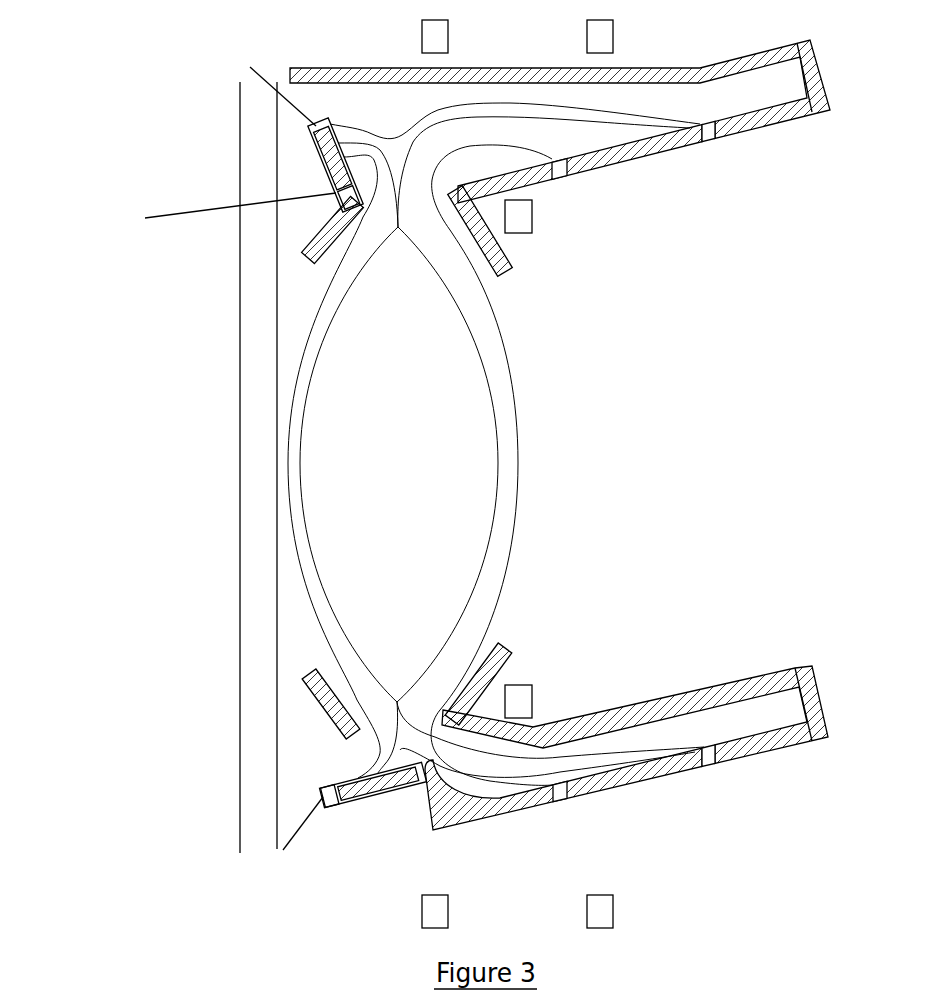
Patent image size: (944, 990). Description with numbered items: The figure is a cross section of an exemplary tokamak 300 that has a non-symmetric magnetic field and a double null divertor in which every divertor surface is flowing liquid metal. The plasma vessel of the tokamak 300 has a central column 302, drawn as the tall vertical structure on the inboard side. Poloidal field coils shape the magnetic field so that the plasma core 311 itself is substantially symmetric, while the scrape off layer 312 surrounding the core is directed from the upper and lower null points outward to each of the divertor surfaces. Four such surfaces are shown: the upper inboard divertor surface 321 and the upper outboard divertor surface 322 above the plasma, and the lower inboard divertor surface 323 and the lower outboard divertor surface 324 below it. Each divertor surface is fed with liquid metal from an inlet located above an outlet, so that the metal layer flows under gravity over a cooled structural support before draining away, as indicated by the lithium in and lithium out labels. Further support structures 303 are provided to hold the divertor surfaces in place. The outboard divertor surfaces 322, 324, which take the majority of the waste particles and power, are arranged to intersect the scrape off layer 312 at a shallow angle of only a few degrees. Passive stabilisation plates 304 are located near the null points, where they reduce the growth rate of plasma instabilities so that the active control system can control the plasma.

The tokamak 300 is at (190, 369).
The central column 302 is at (240, 187).
The support structures 303 is at (722, 58).
The passive stabilisation plates 304 is at (318, 238).
The plasma core 311 is at (490, 370).
The scrape off layer 312 is at (290, 413).
The upper inboard divertor surface 321 is at (312, 133).
The upper outboard divertor surface 322 is at (636, 148).
The lower inboard divertor surface 323 is at (357, 797).
The lower outboard divertor surface 324 is at (646, 764).